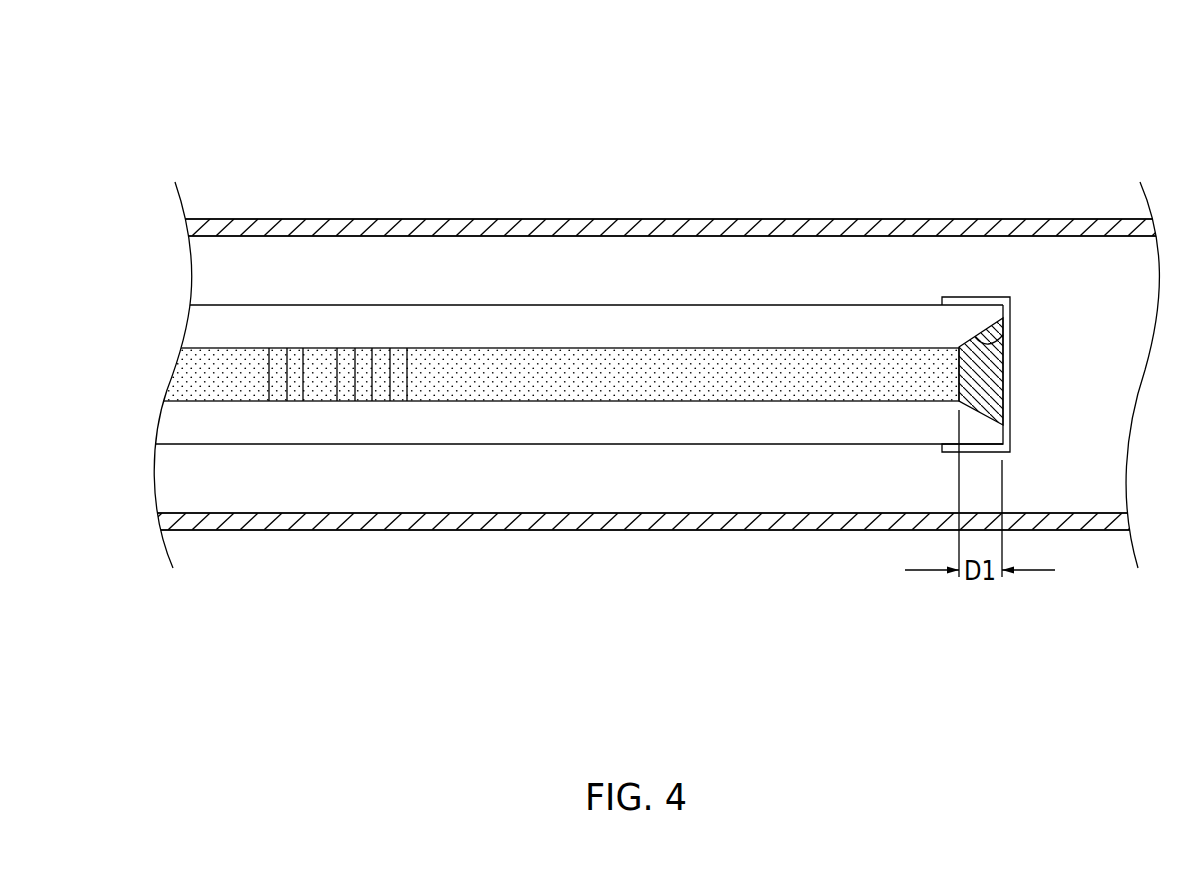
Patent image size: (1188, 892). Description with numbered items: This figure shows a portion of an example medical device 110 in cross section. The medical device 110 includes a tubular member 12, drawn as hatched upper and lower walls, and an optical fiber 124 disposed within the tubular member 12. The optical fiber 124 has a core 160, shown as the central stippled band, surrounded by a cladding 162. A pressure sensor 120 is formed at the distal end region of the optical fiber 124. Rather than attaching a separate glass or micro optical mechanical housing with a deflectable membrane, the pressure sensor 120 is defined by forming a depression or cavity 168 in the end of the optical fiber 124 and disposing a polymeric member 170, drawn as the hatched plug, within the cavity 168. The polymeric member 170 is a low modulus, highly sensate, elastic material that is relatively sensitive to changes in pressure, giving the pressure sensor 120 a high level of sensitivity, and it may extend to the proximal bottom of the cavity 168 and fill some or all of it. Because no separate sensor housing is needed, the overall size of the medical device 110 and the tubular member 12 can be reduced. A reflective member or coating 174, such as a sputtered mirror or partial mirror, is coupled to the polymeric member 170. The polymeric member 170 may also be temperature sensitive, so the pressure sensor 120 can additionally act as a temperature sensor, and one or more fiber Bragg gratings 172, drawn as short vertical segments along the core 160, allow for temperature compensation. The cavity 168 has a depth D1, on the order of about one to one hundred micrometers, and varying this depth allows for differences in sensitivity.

The medical device 110 is at (323, 130).
The tubular member 12 is at (695, 222).
The optical fiber 124 is at (307, 303).
The core 160 is at (532, 360).
The cladding 162 is at (732, 323).
The cavity 168 is at (1008, 295).
The pressure sensor 120 is at (1033, 311).
The reflective member or coating 174 is at (1012, 358).
The polymeric member 170 is at (978, 402).
The fiber Bragg gratings 172 is at (266, 392).